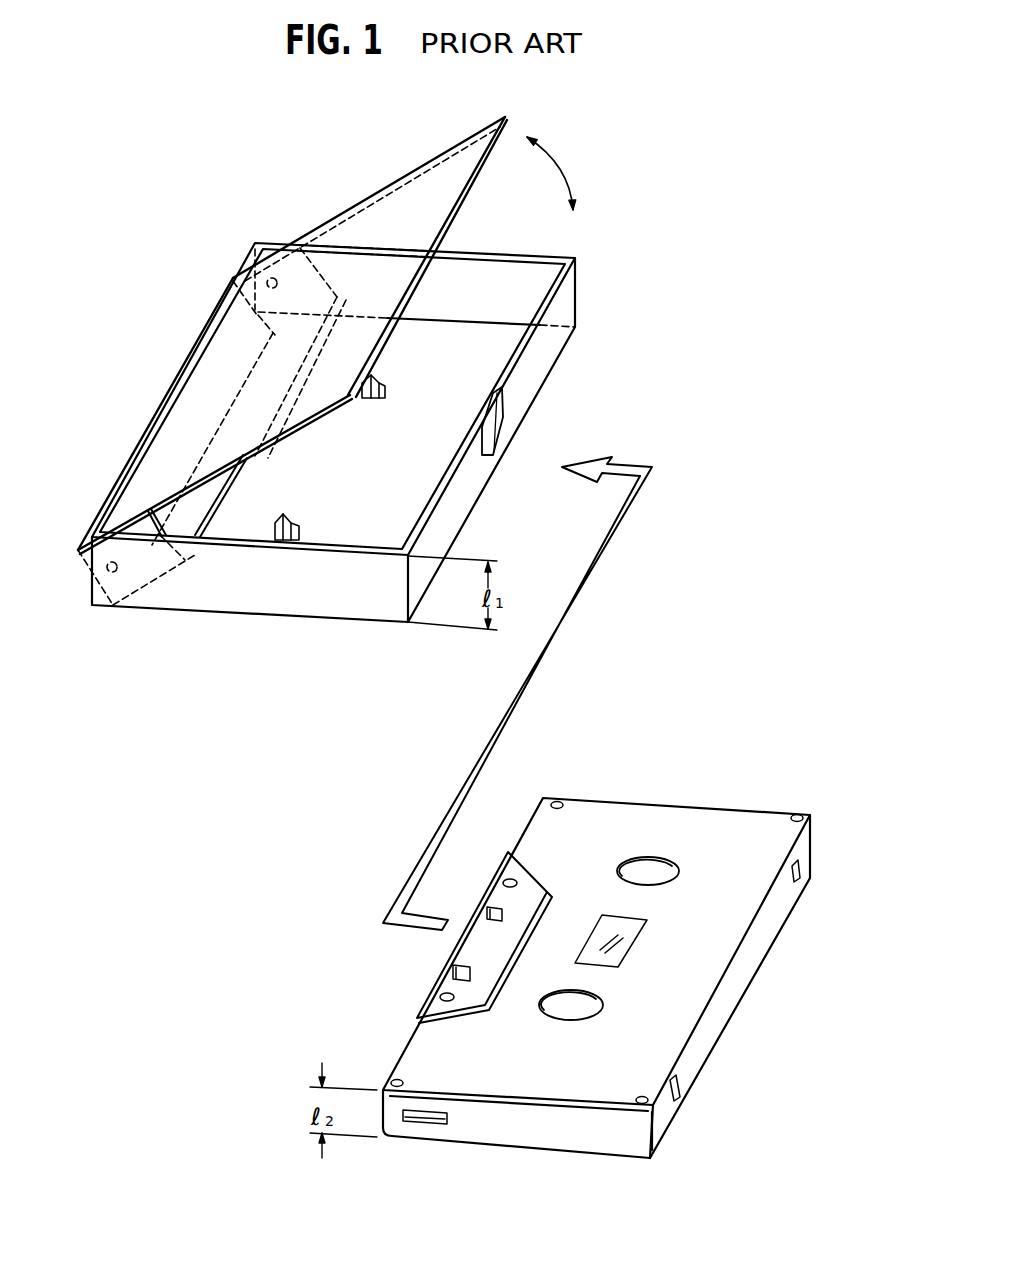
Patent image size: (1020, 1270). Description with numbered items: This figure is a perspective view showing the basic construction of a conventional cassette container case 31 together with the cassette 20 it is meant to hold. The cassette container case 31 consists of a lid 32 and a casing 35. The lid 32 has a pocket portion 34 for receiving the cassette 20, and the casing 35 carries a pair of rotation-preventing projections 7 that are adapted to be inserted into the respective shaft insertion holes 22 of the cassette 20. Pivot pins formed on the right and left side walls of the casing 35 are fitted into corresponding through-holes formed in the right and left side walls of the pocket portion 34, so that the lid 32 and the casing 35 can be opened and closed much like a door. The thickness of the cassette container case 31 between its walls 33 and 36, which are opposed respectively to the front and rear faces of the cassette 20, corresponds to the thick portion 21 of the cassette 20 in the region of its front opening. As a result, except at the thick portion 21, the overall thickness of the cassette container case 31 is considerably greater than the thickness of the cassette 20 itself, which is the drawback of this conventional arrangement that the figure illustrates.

The rotation-preventing projections 7 is at (300, 520).
The cassette 20 is at (623, 793).
The thick portion 21 is at (437, 972).
The shaft insertion holes 22 is at (646, 870).
The cassette container case 31 is at (352, 203).
The lid 32 is at (450, 142).
The wall 33 is at (414, 192).
The pocket portion 34 is at (192, 502).
The casing 35 is at (478, 508).
The wall 36 is at (480, 372).